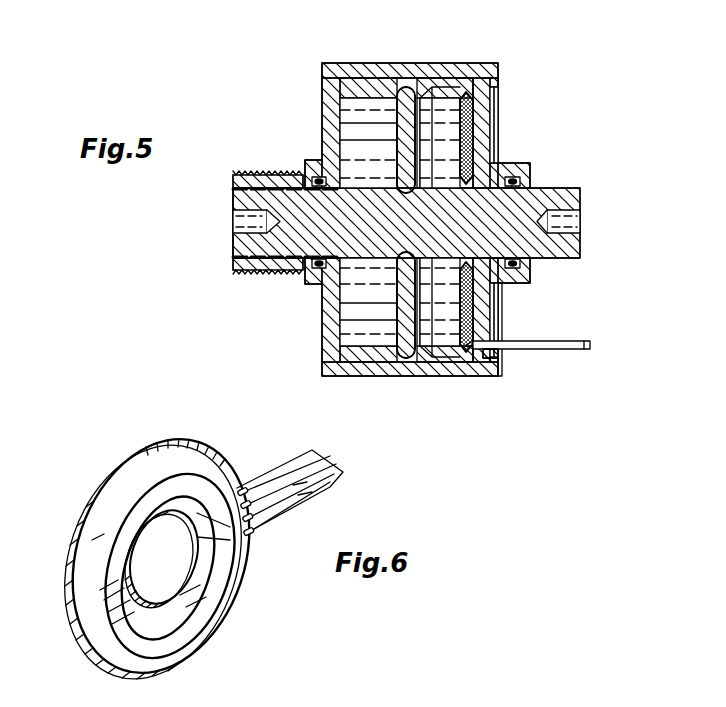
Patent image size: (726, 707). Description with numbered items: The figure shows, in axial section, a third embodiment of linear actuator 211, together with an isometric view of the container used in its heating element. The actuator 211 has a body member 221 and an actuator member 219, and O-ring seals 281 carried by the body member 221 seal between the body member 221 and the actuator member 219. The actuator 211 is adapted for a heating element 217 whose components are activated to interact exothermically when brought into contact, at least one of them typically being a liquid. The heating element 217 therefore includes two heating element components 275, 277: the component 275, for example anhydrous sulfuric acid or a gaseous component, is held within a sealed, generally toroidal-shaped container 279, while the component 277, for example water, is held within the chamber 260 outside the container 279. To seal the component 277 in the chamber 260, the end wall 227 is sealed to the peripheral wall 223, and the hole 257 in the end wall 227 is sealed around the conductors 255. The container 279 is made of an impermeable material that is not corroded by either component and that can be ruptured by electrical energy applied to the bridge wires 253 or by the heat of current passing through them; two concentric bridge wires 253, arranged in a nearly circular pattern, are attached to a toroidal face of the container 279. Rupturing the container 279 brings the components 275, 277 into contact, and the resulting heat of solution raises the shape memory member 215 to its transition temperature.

In FIG. 5, the actuator 211 is at (468, 64).
In FIG. 5, the shape memory member 215 is at (362, 376).
In FIG. 5, the heating element 217 is at (447, 329).
In FIG. 5, the actuator member 219 is at (290, 237).
In FIG. 5, the body member 221 is at (412, 235).
In FIG. 5, the peripheral wall 223 is at (470, 370).
In FIG. 5, the end wall 227 is at (486, 303).
In FIG. 6, the bridge wires 253 is at (140, 502).
In FIG. 5, the conductors 255 is at (574, 350).
In FIG. 6, the conductors 255 is at (340, 472).
In FIG. 5, the hole 257 is at (503, 360).
In FIG. 5, the chamber 260 is at (352, 102).
In FIG. 5, the heating element component 275 is at (473, 106).
In FIG. 5, the heating element component 277 is at (438, 100).
In FIG. 5, the container 279 is at (498, 124).
In FIG. 6, the container 279 is at (158, 460).
In FIG. 5, the O-ring seals 281 is at (314, 178).